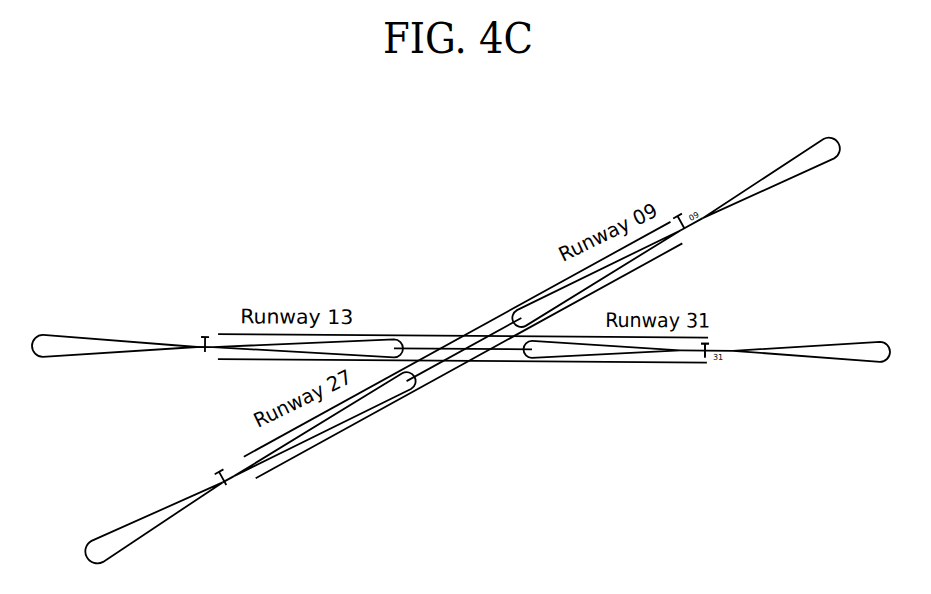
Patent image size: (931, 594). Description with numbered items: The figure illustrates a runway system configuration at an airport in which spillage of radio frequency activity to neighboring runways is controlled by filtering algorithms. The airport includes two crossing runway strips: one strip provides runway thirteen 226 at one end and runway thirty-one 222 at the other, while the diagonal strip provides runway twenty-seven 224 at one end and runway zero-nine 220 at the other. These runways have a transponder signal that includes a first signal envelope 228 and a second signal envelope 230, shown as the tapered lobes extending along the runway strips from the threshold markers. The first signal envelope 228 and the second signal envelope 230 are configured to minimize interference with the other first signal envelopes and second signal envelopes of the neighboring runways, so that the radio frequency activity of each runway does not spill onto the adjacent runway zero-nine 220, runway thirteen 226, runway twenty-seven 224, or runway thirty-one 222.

The runway 09 220 is at (720, 204).
The runway 31 222 is at (723, 363).
The runway 27 224 is at (227, 485).
The runway 13 226 is at (200, 335).
The first signal envelope 228 is at (365, 337).
The second signal envelope 230 is at (63, 337).